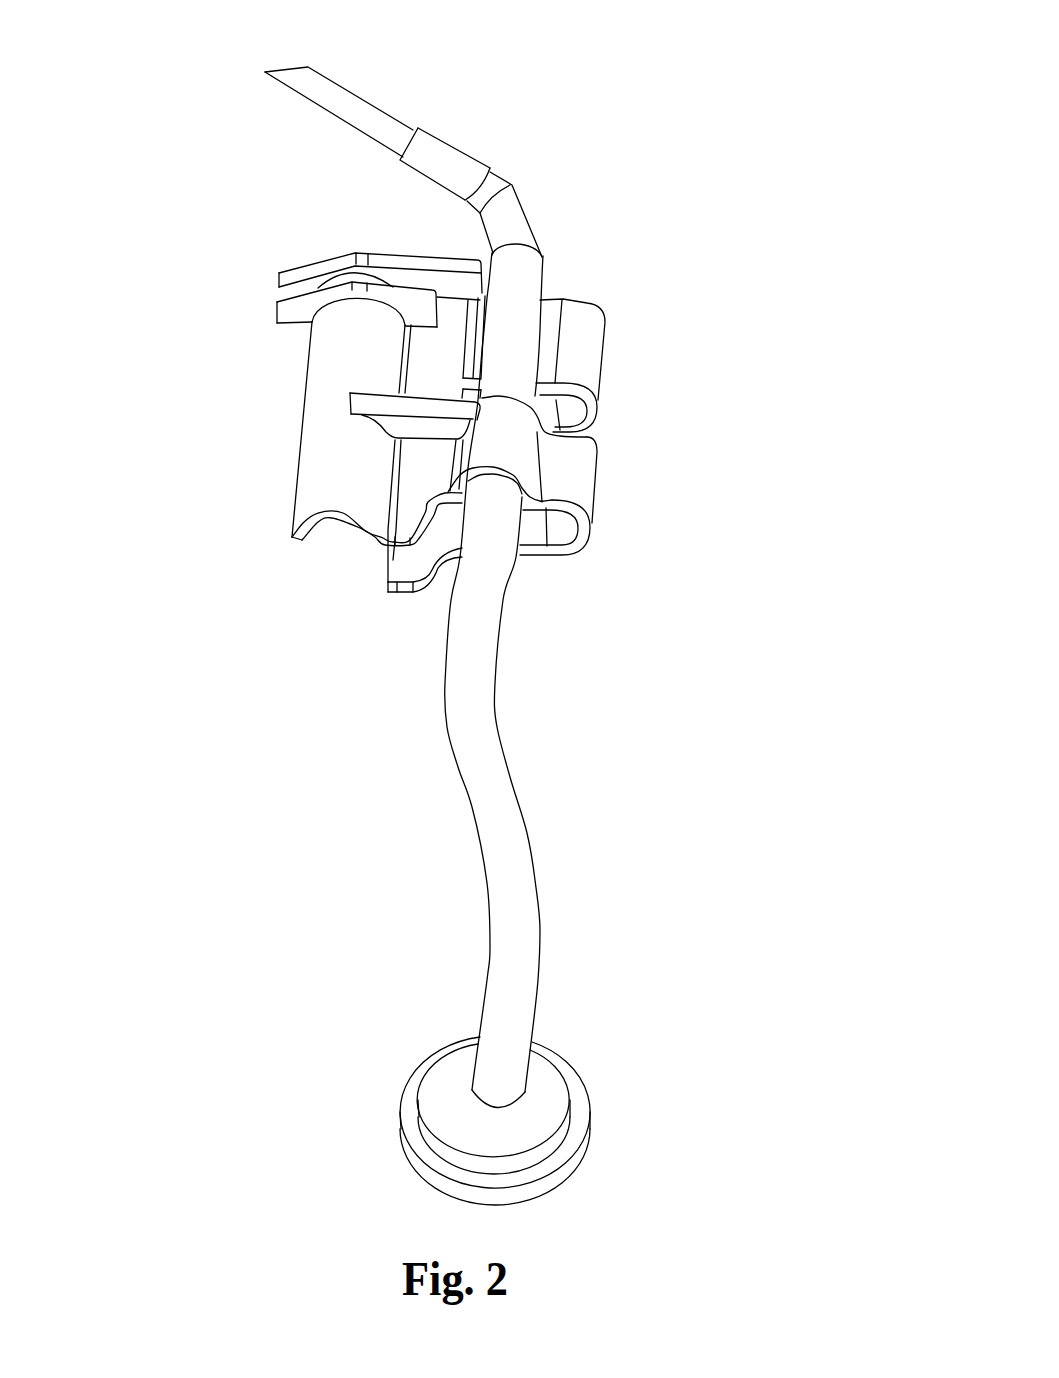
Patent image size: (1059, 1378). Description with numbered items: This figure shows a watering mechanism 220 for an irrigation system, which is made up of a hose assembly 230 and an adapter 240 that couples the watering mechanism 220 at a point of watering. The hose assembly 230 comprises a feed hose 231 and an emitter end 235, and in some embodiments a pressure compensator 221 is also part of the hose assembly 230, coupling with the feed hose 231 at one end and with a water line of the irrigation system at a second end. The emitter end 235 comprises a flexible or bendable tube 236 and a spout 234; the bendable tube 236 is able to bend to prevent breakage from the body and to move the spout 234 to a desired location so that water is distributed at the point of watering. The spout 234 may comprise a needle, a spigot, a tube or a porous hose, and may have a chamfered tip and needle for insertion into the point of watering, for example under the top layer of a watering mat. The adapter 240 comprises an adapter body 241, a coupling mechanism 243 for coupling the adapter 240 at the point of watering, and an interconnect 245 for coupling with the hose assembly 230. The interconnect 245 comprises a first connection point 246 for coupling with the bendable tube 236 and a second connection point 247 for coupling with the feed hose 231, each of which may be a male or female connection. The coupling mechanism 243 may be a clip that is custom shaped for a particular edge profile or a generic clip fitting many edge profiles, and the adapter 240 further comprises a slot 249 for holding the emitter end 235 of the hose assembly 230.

The watering mechanism 220 is at (793, 34).
The pressure compensator 221 is at (557, 1088).
The hose assembly 230 is at (580, 657).
The feed hose 231 is at (517, 874).
The spout 234 is at (293, 63).
The emitter end 235 is at (488, 146).
The bendable tube 236 is at (513, 174).
The adapter 240 is at (178, 392).
The adapter body 241 is at (313, 463).
The coupling mechanism 243 is at (378, 582).
The interconnect 245 is at (520, 461).
The first connection point 246 is at (520, 386).
The second connection point 247 is at (522, 555).
The slot 249 is at (278, 297).